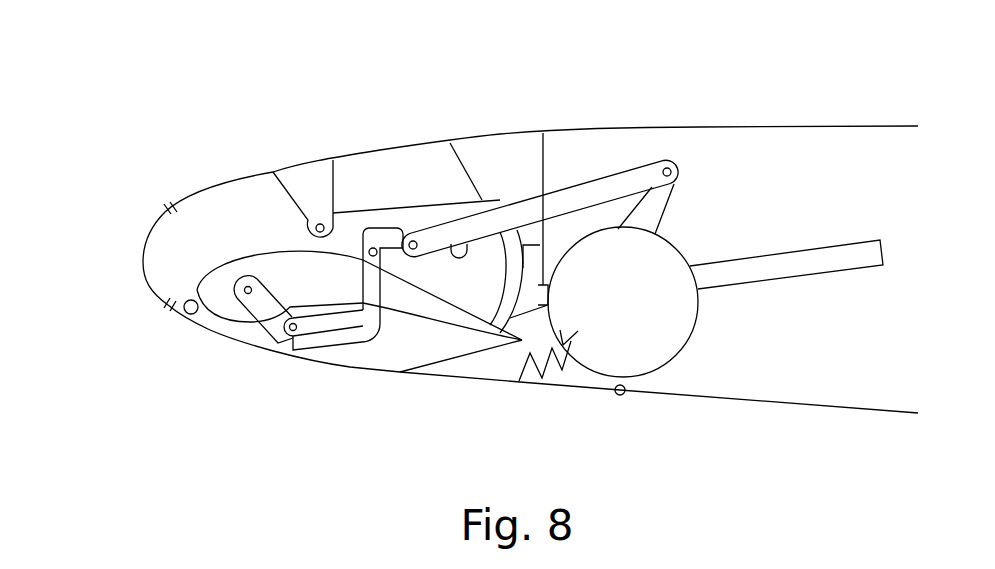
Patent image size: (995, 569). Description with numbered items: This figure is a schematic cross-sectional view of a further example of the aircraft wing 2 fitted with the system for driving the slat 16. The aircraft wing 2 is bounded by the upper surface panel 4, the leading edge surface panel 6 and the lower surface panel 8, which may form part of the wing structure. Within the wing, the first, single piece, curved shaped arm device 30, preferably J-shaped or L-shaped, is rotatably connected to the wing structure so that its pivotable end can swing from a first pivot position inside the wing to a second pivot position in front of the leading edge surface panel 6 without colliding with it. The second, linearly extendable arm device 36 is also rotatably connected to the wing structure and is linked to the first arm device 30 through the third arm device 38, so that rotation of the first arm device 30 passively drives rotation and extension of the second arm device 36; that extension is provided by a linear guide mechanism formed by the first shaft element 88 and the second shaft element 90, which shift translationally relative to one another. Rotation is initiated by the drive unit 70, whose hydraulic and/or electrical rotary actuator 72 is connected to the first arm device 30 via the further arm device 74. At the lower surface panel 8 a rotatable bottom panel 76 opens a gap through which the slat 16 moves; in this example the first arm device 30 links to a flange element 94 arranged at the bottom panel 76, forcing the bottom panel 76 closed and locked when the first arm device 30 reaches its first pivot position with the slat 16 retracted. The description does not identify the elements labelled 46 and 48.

The aircraft wing 2 is at (564, 243).
The upper surface panel 4 is at (731, 126).
The leading edge surface panel 6 is at (138, 261).
The lower surface panel 8 is at (740, 403).
The slat 16 is at (220, 193).
The first curved shaped arm device 30 is at (367, 210).
The second linearly extendable arm device 36 is at (328, 352).
The third arm device 38 is at (348, 330).
The upper skin panel 46 is at (304, 174).
The rear skin panel 48 is at (497, 147).
The drive unit 70 is at (717, 206).
The rotary actuator 72 is at (702, 252).
The further arm device 74 is at (627, 168).
The bottom panel 76 is at (436, 378).
The first shaft element 88 is at (304, 353).
The second shaft element 90 is at (885, 236).
The flange element 94 is at (479, 358).